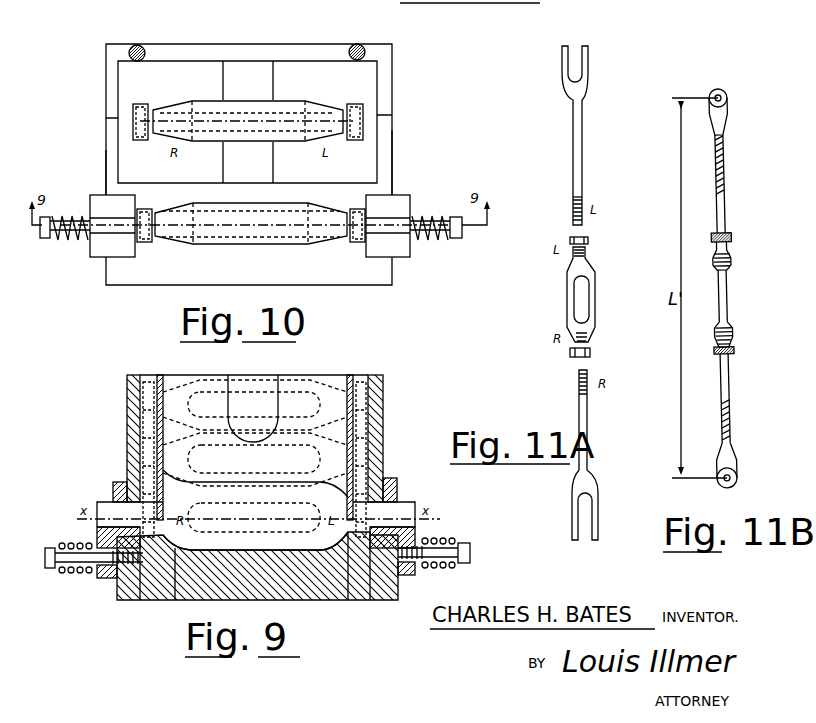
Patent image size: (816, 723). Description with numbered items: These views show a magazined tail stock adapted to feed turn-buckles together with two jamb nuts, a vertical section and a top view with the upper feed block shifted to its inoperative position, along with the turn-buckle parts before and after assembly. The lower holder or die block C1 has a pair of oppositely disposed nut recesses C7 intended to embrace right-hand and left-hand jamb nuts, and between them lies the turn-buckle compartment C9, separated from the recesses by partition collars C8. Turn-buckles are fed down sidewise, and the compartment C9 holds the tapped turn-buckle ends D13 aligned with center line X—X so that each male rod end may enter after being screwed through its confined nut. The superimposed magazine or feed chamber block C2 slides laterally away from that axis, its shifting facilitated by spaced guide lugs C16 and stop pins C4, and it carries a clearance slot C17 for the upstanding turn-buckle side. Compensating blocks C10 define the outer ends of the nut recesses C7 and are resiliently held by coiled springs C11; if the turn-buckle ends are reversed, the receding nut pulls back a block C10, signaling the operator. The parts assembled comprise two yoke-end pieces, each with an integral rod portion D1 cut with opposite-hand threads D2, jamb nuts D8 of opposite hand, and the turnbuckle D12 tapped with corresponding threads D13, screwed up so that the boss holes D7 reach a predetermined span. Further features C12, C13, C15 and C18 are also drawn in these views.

In FIG. 10, the lower holder or die block C1 is at (113, 268).
In FIG. 9, the lower holder or die block C1 is at (125, 585).
In FIG. 10, the superimposed magazine or feed chamber block C2 is at (368, 85).
In FIG. 9, the superimposed magazine or feed chamber block C2 is at (384, 425).
In FIG. 10, the stop pins C4 is at (362, 48).
In FIG. 10, the nut recesses C7 is at (144, 243).
In FIG. 9, the nut recesses C7 is at (150, 543).
In FIG. 9, the partition collars C8 is at (160, 537).
In FIG. 10, the turn-buckle compartment C9 is at (315, 237).
In FIG. 9, the turn-buckle compartment C9 is at (190, 543).
In FIG. 10, the compensating blocks C10 is at (102, 202).
In FIG. 9, the compensating blocks C10 is at (98, 532).
In FIG. 10, the coiled springs C11 is at (60, 240).
In FIG. 9, the coiled springs C11 is at (60, 570).
In FIG. 10, the resilient pad block C12 is at (135, 128).
In FIG. 9, the resilient pad block C12 is at (142, 412).
In FIG. 10, the upper tapered shaft C13 is at (268, 118).
In FIG. 10, the partition C15 is at (240, 70).
In FIG. 9, the partition C15 is at (240, 395).
In FIG. 10, the guide lugs C16 is at (387, 168).
In FIG. 9, the clearance slot C17 is at (385, 492).
In FIG. 10, the bolt bore C18 is at (108, 230).
In FIG. 11A, the rod portion D1 is at (582, 140).
In FIG. 11B, the rod portion D1 is at (723, 170).
In FIG. 11A, the threads D2 is at (574, 210).
In FIG. 11B, the boss holes D7 is at (728, 99).
In FIG. 11A, the jamb nuts D8 is at (590, 241).
In FIG. 11B, the jamb nuts D8 is at (730, 238).
In FIG. 11A, the turnbuckle D12 is at (595, 293).
In FIG. 11B, the turnbuckle D12 is at (724, 296).
In FIG. 11A, the turnbuckle threads D13 is at (585, 258).